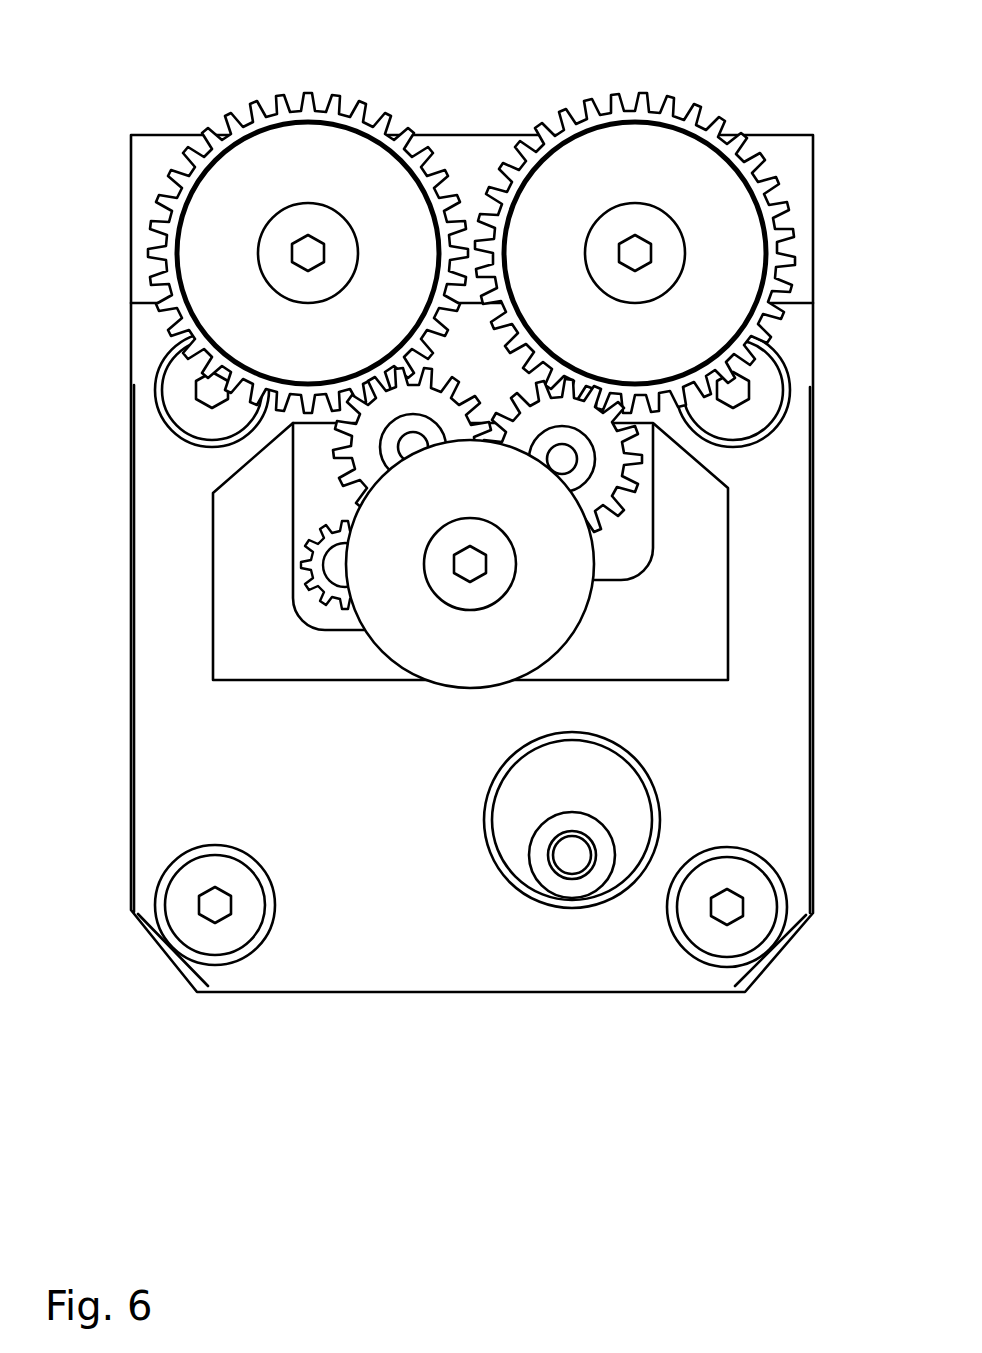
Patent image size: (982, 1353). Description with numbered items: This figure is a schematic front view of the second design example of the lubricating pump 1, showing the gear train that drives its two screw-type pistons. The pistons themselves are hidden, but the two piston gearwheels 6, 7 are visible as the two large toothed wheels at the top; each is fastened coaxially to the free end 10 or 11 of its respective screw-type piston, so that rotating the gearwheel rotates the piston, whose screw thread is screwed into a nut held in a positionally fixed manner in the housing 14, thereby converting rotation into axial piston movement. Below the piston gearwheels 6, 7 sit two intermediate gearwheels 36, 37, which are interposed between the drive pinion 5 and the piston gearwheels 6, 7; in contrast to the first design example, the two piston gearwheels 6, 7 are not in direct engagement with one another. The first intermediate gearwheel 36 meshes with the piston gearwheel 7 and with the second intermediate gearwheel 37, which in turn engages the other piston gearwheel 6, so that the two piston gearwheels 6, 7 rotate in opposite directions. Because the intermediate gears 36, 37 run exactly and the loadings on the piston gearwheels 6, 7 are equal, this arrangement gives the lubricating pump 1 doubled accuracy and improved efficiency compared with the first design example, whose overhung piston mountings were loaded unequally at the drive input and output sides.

The lubricating pump 1 is at (472, 629).
The drive pinion 5 is at (330, 577).
The piston gearwheel 6 is at (635, 206).
The piston gearwheel 7 is at (308, 216).
The free end 10 is at (635, 267).
The free end 11 is at (310, 260).
The housing 14 is at (623, 967).
The first intermediate gearwheel 36 is at (373, 425).
The second intermediate gearwheel 37 is at (607, 473).